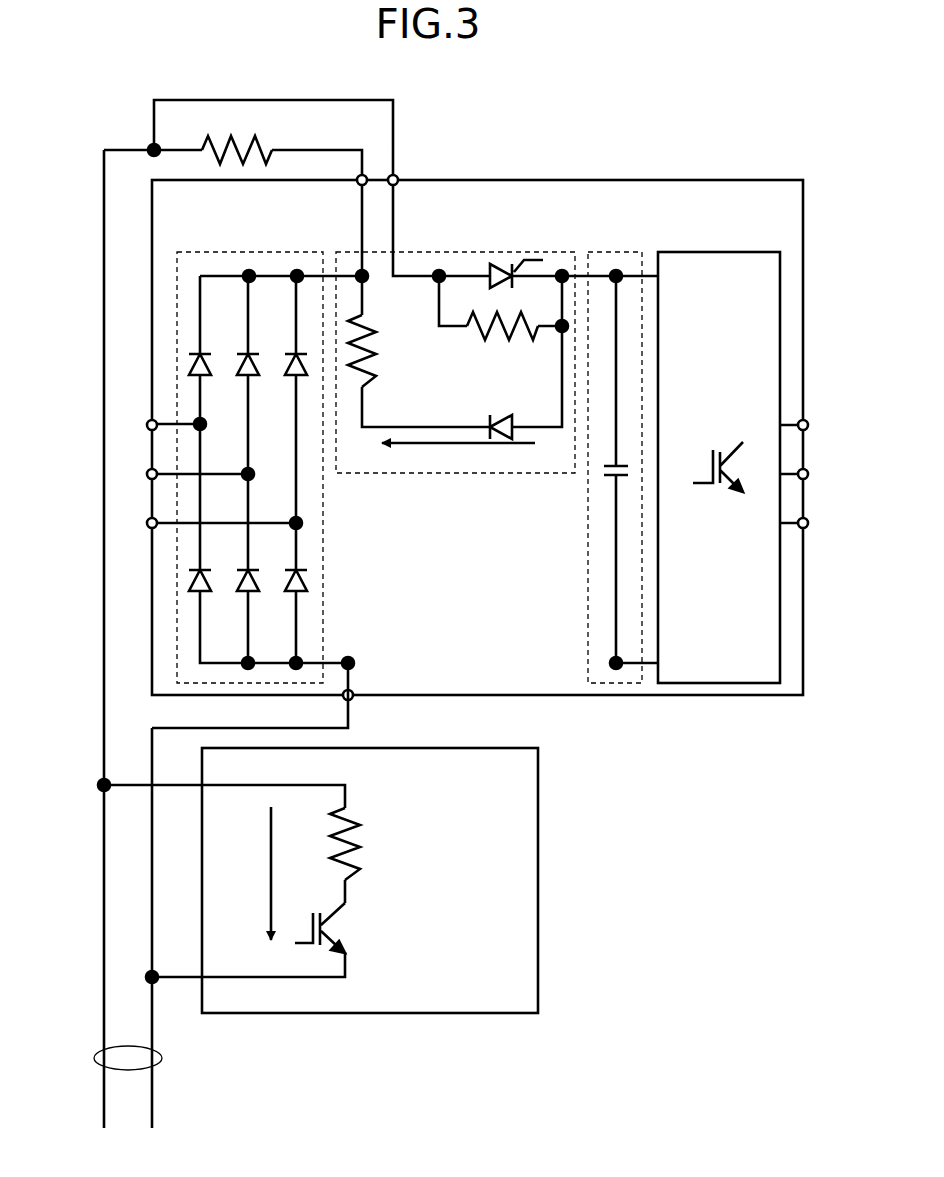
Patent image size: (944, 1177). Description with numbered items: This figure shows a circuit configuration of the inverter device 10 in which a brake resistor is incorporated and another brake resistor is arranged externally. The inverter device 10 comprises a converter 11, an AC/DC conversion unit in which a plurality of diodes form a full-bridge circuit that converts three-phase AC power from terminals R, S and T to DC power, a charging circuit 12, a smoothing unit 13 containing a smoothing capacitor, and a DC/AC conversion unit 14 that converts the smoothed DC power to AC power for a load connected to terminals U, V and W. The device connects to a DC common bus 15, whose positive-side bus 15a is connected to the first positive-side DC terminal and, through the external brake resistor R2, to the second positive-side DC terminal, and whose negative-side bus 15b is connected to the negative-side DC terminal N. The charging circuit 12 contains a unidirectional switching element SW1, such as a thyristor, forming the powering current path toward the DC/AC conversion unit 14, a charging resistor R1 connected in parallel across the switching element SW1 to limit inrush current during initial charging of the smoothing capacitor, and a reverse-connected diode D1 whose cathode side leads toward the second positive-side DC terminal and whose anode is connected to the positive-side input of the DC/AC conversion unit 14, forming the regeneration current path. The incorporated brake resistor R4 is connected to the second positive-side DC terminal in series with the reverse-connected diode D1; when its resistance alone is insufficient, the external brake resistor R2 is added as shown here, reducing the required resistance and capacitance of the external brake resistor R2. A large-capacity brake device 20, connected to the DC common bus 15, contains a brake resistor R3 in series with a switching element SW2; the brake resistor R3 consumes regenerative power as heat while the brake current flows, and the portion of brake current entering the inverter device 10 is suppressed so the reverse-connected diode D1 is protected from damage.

The inverter device 10 is at (743, 180).
The converter 11 is at (323, 602).
The charging circuit 12 is at (455, 372).
The smoothing unit 13 is at (588, 602).
The DC/AC conversion unit 14 is at (737, 252).
The DC common bus 15 is at (94, 1058).
The positive-side bus 15a is at (104, 1092).
The negative-side bus 15b is at (152, 1092).
The large-capacity brake device 20 is at (318, 867).
The charging resistor R1 is at (502, 340).
The external brake resistor R2 is at (237, 141).
The brake resistor R3 is at (330, 844).
The brake resistor R4 is at (377, 351).
The switching element SW1 is at (501, 258).
The switching element SW2 is at (343, 928).
The reverse-connected diode D1 is at (502, 413).